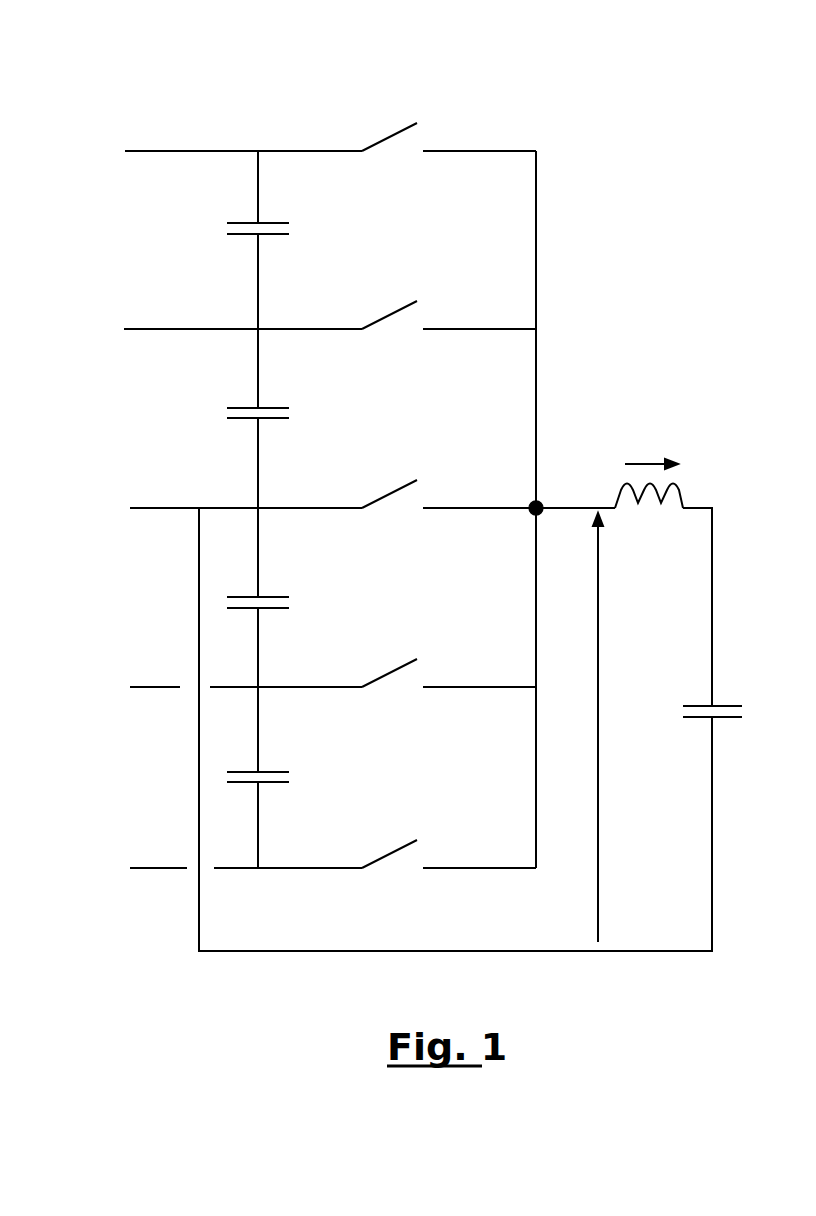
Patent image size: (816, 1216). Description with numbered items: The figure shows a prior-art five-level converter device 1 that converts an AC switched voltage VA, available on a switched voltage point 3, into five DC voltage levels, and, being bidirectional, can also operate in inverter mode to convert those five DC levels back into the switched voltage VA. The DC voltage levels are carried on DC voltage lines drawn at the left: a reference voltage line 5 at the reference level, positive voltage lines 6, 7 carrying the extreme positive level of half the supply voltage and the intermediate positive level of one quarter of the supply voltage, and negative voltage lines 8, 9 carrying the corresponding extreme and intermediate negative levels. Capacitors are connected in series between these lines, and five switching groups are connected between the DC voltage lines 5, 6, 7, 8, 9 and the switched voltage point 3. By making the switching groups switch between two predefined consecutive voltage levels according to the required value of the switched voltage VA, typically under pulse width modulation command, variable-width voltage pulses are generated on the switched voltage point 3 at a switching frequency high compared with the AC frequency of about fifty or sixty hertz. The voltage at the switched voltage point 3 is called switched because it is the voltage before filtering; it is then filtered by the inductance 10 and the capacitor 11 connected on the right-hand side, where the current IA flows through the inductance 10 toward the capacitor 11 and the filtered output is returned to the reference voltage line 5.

The five-level converter device 1 is at (666, 91).
The switched voltage point 3 is at (541, 505).
The reference voltage line 5 is at (158, 508).
The positive voltage line 6 is at (152, 151).
The positive voltage line 7 is at (152, 329).
The negative voltage line 8 is at (150, 868).
The negative voltage line 9 is at (150, 687).
The inductance 10 is at (681, 492).
The capacitor 11 is at (722, 707).